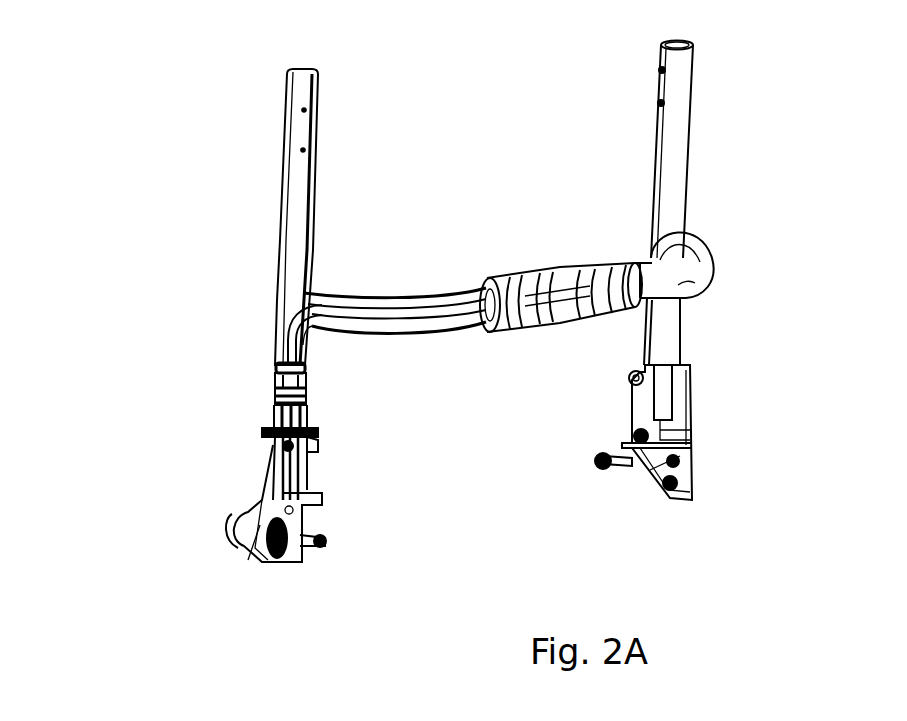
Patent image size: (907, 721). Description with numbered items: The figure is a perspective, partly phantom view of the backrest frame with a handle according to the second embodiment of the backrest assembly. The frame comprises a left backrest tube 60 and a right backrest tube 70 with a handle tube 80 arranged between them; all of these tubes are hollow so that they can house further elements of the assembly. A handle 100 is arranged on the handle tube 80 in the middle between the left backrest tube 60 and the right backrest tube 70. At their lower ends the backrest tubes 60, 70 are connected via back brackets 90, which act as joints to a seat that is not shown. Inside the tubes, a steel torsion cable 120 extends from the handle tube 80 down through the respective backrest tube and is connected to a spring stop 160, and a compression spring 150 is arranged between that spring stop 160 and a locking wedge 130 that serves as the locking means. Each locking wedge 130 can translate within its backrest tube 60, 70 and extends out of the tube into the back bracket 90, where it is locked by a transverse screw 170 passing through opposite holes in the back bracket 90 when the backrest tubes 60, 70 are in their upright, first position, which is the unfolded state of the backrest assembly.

The left backrest tube 60 is at (297, 86).
The right backrest tube 70 is at (680, 88).
The handle tube 80 is at (727, 247).
The handle 100 is at (525, 270).
The spring stop 160 is at (272, 363).
The compression spring 150 is at (268, 390).
The locking wedge 130 is at (265, 414).
The steel torsion cable 120 is at (258, 447).
The transverse screw 170 is at (258, 507).
The back bracket 90 is at (245, 560).